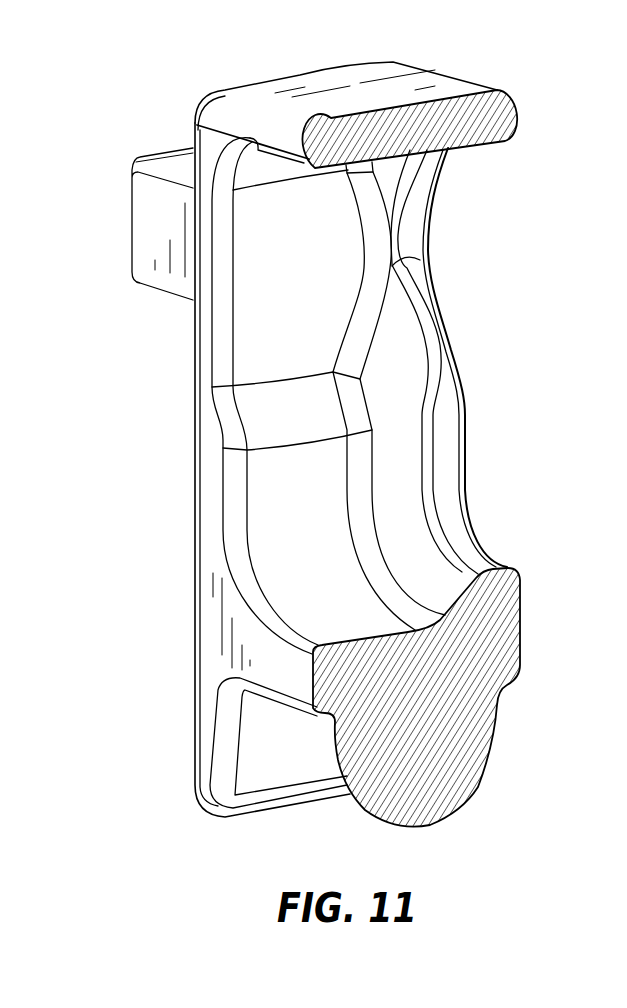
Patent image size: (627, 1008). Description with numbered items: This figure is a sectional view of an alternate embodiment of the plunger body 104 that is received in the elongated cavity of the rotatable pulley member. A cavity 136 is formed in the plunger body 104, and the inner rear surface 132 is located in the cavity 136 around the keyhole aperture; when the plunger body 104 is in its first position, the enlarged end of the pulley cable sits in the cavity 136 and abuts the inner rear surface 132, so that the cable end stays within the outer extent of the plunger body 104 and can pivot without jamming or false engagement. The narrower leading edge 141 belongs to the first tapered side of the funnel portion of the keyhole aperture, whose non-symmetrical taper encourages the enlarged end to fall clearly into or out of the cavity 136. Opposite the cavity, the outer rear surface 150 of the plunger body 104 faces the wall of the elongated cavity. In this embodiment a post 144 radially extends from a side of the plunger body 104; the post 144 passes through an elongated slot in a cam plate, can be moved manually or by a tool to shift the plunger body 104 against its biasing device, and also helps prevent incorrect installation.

The plunger body 104 is at (545, 78).
The inner rear surface 132 is at (408, 337).
The cavity 136 is at (285, 528).
The narrower leading edge 141 is at (445, 388).
The post 144 is at (143, 200).
The outer rear surface 150 is at (217, 663).